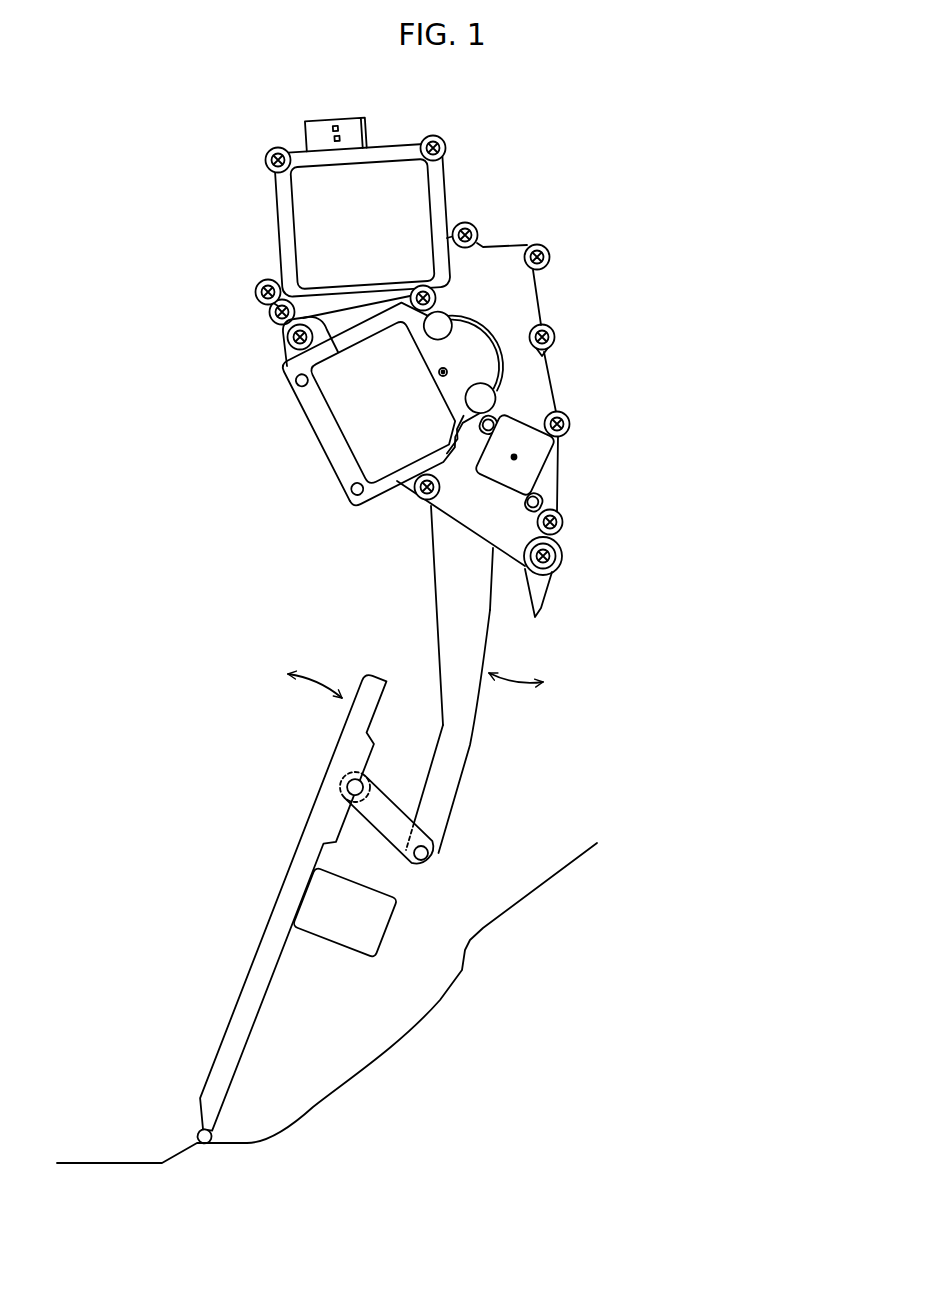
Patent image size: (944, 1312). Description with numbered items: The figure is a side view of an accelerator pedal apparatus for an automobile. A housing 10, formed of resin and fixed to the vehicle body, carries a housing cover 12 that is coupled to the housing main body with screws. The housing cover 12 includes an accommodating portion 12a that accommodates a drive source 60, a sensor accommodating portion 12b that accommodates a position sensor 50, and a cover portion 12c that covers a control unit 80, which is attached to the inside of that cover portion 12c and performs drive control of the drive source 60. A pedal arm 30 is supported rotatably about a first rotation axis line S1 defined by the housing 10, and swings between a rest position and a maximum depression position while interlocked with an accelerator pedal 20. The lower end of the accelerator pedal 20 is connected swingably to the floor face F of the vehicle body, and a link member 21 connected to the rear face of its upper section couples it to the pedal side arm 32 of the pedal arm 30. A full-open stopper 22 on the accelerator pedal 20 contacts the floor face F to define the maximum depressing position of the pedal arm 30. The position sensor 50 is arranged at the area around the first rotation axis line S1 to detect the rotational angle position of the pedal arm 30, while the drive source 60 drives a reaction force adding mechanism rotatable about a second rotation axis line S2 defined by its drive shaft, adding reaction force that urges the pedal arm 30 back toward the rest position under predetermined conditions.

The housing 10 is at (541, 311).
The housing cover 12 is at (502, 263).
The accommodating portion 12a is at (352, 452).
The sensor accommodating portion 12b is at (538, 476).
The cover portion 12c is at (300, 233).
The accelerator pedal 20 is at (279, 886).
The link member 21 is at (386, 809).
The full-open stopper 22 is at (383, 927).
The pedal arm 30 is at (426, 577).
The pedal side arm 32 is at (464, 738).
The position sensor 50 is at (519, 437).
The drive source 60 is at (324, 412).
The control unit 80 is at (272, 196).
The first rotation axis line S1 is at (519, 458).
The second rotation axis line S2 is at (437, 370).
The floor face F is at (325, 1101).